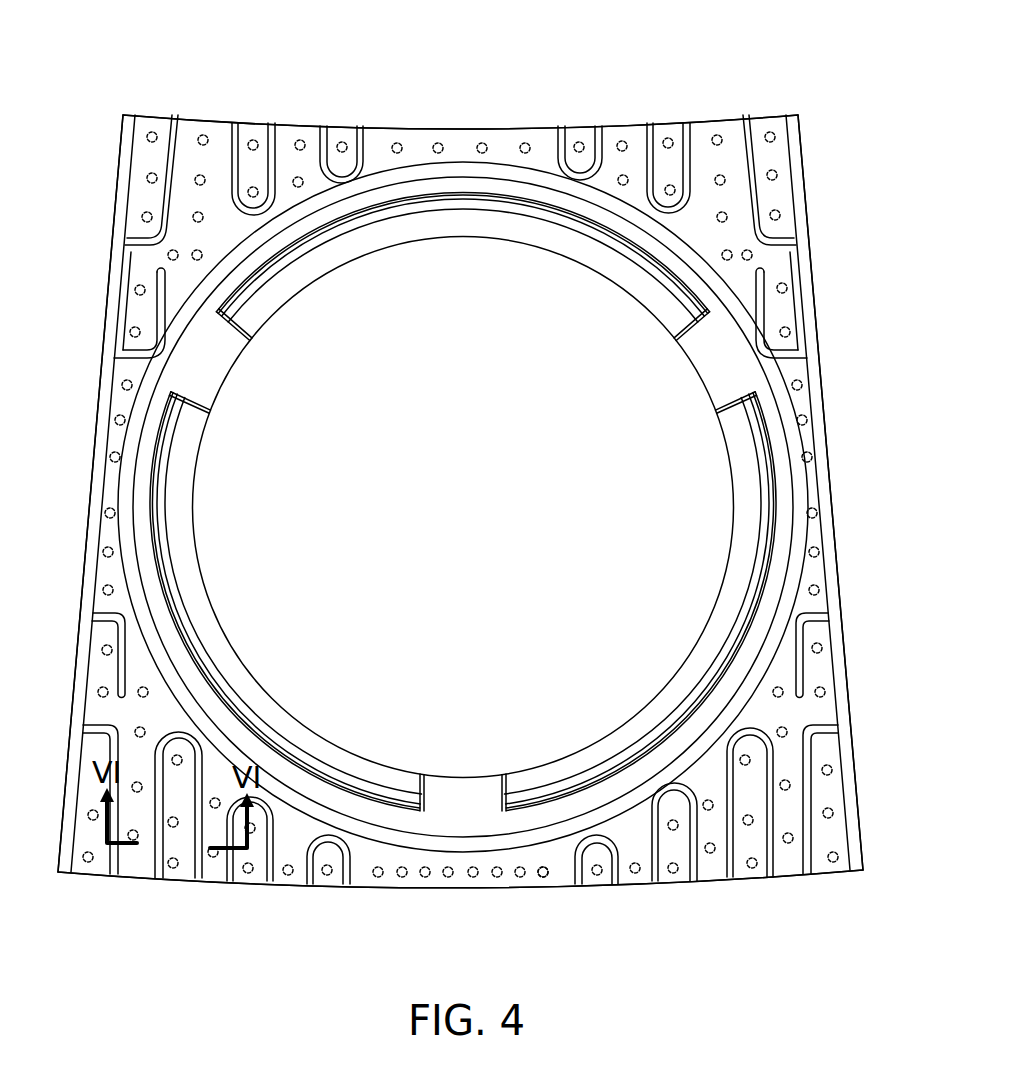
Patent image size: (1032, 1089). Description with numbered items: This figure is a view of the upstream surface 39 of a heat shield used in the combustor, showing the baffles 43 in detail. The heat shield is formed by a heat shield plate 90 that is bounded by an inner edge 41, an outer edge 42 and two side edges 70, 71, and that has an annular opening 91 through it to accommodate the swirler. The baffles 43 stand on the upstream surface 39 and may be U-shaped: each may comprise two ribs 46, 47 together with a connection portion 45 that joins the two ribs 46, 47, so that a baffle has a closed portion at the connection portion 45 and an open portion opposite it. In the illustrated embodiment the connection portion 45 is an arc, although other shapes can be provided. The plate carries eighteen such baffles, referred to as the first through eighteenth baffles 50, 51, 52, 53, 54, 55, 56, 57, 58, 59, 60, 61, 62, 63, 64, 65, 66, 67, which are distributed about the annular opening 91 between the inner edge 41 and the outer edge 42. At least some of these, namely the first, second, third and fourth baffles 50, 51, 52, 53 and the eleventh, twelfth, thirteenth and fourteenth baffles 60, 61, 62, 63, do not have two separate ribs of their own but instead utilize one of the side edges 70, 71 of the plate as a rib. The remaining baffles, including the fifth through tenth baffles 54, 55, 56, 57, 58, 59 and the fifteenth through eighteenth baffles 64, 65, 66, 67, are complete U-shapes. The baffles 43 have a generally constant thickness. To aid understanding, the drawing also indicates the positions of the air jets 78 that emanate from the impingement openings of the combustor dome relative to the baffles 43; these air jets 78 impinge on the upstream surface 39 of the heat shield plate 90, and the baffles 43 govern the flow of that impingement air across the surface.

The upstream surface 39 is at (487, 877).
The inner edge 41 is at (410, 128).
The outer edge 42 is at (440, 890).
The baffles 43 is at (689, 100).
The connection portion 45 is at (672, 215).
The rib 46 is at (690, 152).
The rib 47 is at (643, 180).
The first baffle 50 is at (750, 125).
The second baffle 51 is at (806, 357).
The third baffle 52 is at (830, 615).
The fourth baffle 53 is at (838, 726).
The fifth baffle 54 is at (772, 878).
The sixth baffle 55 is at (693, 880).
The seventh baffle 56 is at (615, 882).
The eighth baffle 57 is at (345, 885).
The ninth baffle 58 is at (265, 882).
The tenth baffle 59 is at (185, 880).
The eleventh baffle 60 is at (105, 878).
The twelfth baffle 61 is at (100, 617).
The thirteenth baffle 62 is at (117, 357).
The fourteenth baffle 63 is at (126, 246).
The fifteenth baffle 64 is at (240, 125).
The sixteenth baffle 65 is at (335, 126).
The seventeenth baffle 66 is at (580, 126).
The eighteenth baffle 67 is at (655, 124).
The side edge 70 is at (98, 443).
The side edge 71 is at (828, 445).
The air jets 78 is at (543, 880).
The heat shield plate 90 is at (388, 897).
The annular opening 91 is at (363, 760).